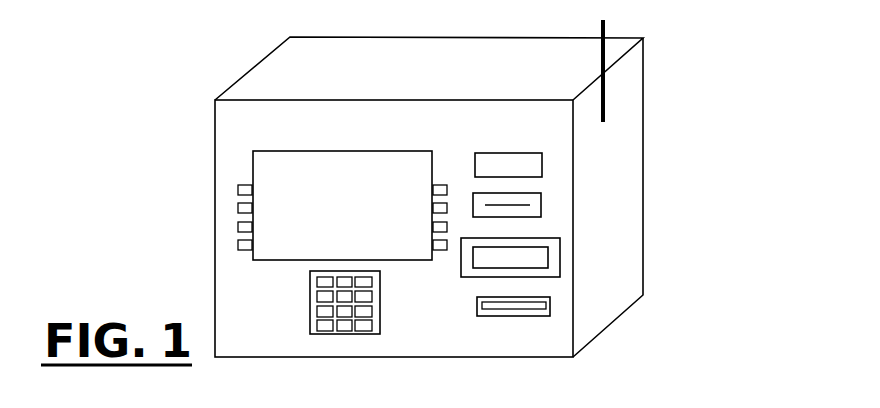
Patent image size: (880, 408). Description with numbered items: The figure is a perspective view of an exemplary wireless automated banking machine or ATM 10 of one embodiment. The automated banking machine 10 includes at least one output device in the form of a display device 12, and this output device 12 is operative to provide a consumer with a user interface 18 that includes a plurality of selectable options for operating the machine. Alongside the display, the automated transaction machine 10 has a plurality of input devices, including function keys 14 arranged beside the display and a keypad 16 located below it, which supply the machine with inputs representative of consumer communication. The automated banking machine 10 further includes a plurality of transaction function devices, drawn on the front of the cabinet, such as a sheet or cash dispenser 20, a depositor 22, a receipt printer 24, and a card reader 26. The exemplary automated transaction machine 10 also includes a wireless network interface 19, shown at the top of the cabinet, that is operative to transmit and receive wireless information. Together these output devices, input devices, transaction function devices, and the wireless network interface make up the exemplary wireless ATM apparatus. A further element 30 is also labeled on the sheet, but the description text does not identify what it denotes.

The automated banking machine 10 is at (643, 115).
The display screen 12 is at (255, 168).
The function keys 14 is at (243, 259).
The keypad 16 is at (310, 310).
The transaction selection output 18 is at (268, 150).
The antenna 19 is at (606, 33).
The deposit acceptor 20 is at (560, 255).
The cash dispenser outlet 22 is at (550, 305).
The card reader 24 is at (542, 168).
The receipt printer outlet 26 is at (541, 208).
The card 30 is at (788, 396).